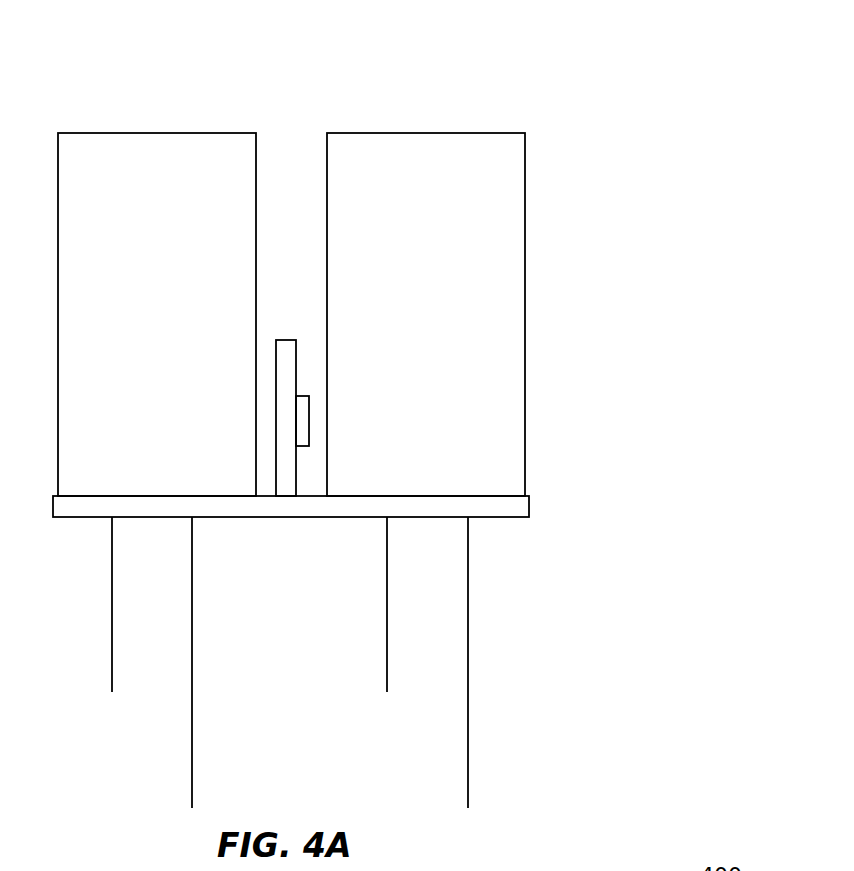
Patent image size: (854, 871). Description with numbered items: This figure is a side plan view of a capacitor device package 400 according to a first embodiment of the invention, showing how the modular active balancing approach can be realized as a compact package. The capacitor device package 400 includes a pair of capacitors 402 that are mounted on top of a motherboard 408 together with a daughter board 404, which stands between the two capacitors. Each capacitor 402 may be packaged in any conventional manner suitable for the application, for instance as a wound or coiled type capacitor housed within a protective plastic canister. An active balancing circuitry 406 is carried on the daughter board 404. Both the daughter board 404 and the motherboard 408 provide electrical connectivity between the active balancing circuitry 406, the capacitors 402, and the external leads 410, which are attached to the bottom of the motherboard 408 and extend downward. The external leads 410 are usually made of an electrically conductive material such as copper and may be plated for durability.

The capacitor device package 400 is at (650, 84).
The capacitor 402 is at (256, 133).
The daughter board 404 is at (296, 358).
The active balancing circuitry 406 is at (310, 418).
The motherboard 408 is at (529, 505).
The external leads 410 is at (387, 658).